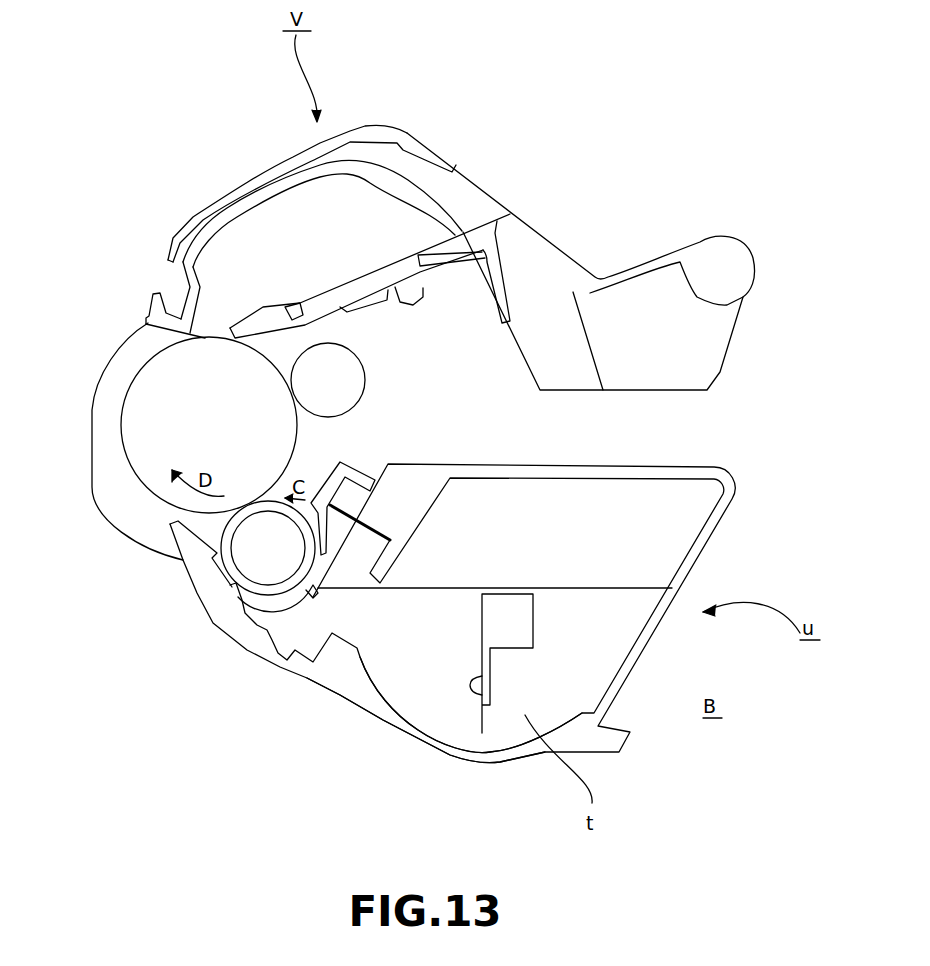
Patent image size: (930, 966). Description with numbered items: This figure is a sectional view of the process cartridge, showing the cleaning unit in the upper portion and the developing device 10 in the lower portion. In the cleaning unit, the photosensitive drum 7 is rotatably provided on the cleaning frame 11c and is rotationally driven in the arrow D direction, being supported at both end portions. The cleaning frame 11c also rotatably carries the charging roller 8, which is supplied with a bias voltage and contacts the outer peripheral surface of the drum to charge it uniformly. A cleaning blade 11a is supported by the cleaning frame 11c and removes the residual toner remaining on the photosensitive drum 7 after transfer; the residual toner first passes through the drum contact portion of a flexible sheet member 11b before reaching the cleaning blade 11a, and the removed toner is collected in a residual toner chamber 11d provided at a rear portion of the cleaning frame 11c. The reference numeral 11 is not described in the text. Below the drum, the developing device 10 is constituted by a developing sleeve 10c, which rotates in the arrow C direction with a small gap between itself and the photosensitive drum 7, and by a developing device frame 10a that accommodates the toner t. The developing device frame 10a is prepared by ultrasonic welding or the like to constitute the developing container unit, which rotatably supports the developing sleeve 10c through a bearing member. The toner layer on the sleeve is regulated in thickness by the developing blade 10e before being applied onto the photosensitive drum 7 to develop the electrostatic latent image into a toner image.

The photosensitive drum 7 is at (152, 420).
The charging roller 8 is at (350, 370).
The developing device 10 is at (625, 717).
The developing device frame 10a is at (365, 695).
The developing sleeve 10c is at (232, 588).
The developing blade 10e is at (370, 470).
The cleaning unit 11 is at (505, 190).
The cleaning blade 11a is at (308, 305).
The flexible sheet member 11b is at (210, 352).
The cleaning frame 11c is at (585, 250).
The residual toner chamber 11d is at (296, 212).